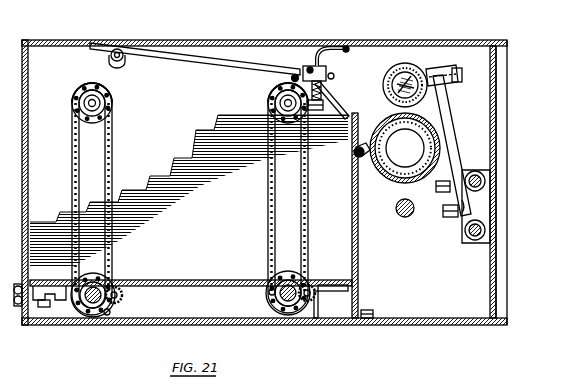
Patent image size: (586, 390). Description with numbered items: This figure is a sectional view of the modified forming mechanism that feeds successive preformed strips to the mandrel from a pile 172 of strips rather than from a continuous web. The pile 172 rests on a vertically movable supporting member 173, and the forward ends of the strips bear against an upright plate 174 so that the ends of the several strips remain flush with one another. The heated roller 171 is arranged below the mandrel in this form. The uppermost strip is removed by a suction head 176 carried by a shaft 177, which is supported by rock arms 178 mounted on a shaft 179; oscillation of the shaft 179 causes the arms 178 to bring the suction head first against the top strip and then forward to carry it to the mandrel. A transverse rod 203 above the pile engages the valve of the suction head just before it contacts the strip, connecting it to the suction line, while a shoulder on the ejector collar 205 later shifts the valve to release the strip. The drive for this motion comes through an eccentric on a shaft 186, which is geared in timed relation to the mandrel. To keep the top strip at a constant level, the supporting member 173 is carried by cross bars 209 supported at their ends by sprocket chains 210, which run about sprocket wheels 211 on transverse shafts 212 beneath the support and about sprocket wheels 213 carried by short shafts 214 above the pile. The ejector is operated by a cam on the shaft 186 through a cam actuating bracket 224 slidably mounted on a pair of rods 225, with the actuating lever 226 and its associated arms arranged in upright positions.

The heated roller 171 is at (383, 181).
The pile of preformed strips 172 is at (172, 158).
The supporting member 173 is at (157, 283).
The upright plate 174 is at (360, 253).
The suction head 176 is at (325, 73).
The shaft 177 is at (308, 69).
The rock arms 178 is at (337, 98).
The shaft 179 is at (355, 160).
The shaft 186 is at (411, 215).
The transverse rod 203 is at (292, 77).
The ejector collar 205 is at (413, 63).
The cross bars 209 is at (122, 296).
The sprocket chains 210 is at (75, 160).
The sprocket wheels 211 is at (91, 316).
The transverse shafts 212 is at (108, 315).
The sprocket wheels 213 is at (108, 95).
The short shafts 214 is at (78, 92).
The cam actuating bracket 224 is at (473, 203).
The rods 225 is at (488, 174).
The actuating lever 226 is at (450, 140).